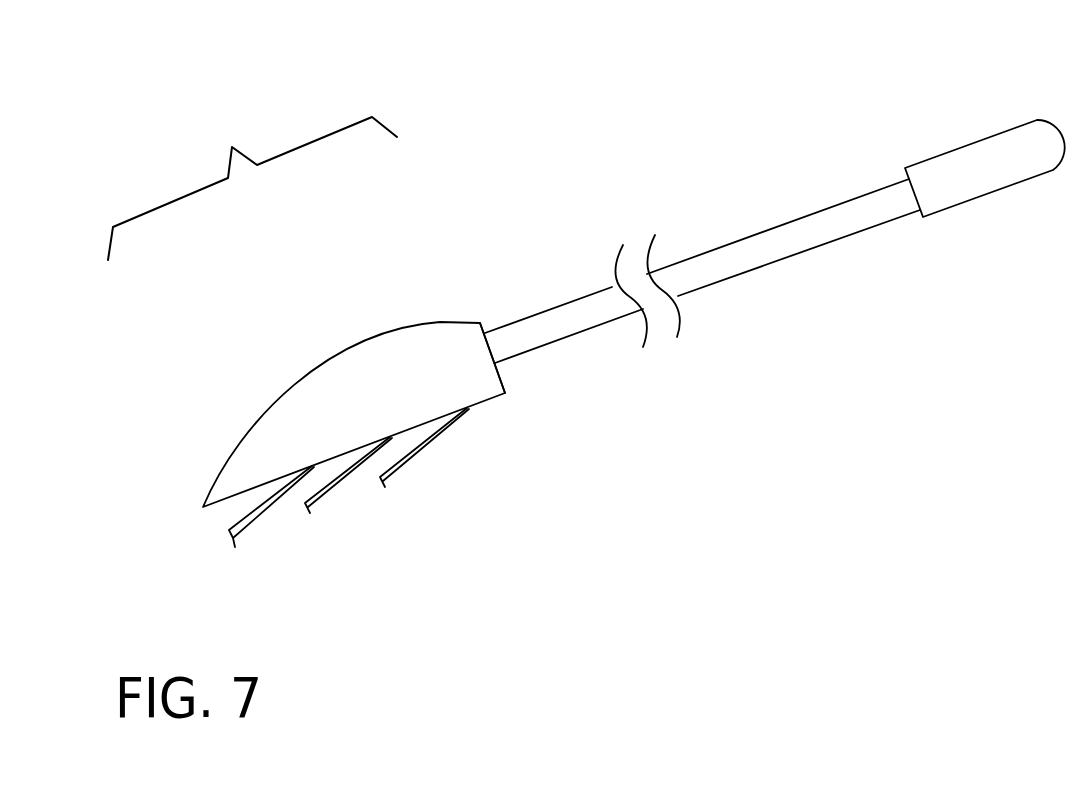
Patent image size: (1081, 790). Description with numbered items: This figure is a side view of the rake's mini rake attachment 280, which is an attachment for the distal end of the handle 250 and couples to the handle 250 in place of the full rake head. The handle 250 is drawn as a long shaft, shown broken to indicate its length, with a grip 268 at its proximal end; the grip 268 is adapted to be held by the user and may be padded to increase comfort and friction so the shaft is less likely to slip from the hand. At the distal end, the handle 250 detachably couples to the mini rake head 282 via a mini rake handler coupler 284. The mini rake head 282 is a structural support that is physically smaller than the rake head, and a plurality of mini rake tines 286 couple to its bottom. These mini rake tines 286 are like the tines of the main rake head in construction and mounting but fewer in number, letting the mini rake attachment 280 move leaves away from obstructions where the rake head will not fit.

The handle 250 is at (790, 242).
The grip 268 is at (980, 158).
The mini rake attachment 280 is at (232, 147).
The mini rake head 282 is at (278, 408).
The mini rake handler coupler 284 is at (490, 345).
The mini rake tines 286 is at (385, 487).